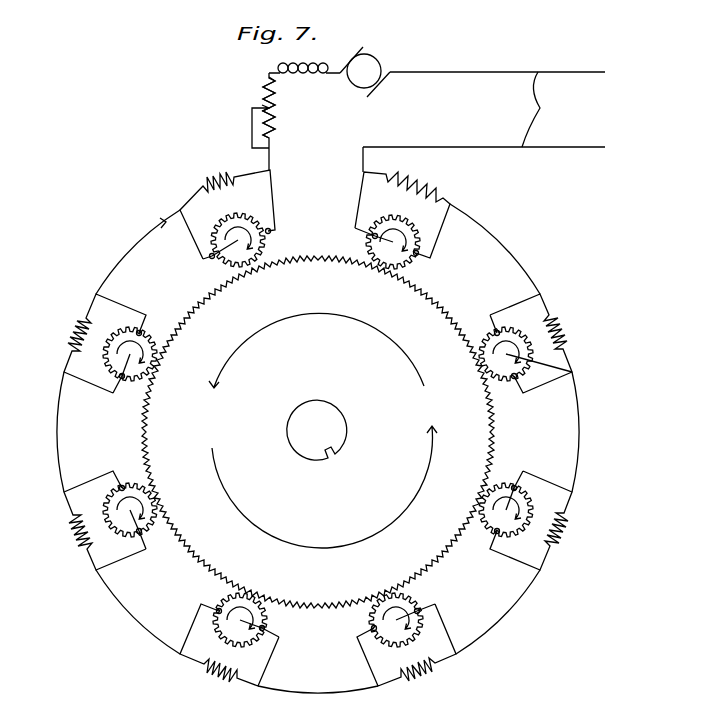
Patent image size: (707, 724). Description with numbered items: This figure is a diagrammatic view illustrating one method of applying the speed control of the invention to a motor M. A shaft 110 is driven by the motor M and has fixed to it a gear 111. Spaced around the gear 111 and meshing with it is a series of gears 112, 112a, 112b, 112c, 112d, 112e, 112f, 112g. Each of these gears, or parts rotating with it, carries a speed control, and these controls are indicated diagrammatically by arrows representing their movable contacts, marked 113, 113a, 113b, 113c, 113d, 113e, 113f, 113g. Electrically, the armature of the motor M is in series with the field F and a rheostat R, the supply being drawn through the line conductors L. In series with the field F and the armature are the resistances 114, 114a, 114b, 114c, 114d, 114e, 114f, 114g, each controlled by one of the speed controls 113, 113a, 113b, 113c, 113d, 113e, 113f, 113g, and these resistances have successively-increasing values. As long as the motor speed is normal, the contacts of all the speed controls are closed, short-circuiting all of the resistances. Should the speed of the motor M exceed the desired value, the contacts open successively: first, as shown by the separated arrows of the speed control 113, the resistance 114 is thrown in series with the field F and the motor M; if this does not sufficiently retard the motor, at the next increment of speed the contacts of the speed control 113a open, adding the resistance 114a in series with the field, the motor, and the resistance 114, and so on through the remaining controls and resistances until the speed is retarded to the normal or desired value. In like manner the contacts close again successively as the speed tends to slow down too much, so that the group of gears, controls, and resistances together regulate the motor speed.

The shaft 110 is at (336, 423).
The gear 111 is at (440, 304).
The gear 112 is at (271, 231).
The gear 112a is at (141, 366).
The gear 112b is at (156, 497).
The gear 112c is at (263, 630).
The gear 112d is at (420, 625).
The gear 112e is at (487, 523).
The gear 112f is at (514, 378).
The gear 112g is at (394, 268).
The speed control 113 is at (239, 239).
The speed control 113a is at (130, 355).
The speed control 113b is at (130, 512).
The speed control 113c is at (265, 607).
The speed control 113d is at (397, 617).
The speed control 113e is at (504, 506).
The speed control 113f is at (572, 372).
The speed control 113g is at (391, 244).
The resistance 114 is at (208, 181).
The resistance 114a is at (72, 328).
The resistance 114b is at (73, 536).
The resistance 114c is at (220, 675).
The resistance 114d is at (430, 682).
The resistance 114e is at (572, 532).
The resistance 114f is at (568, 313).
The resistance 114g is at (437, 181).
The field F is at (302, 67).
The motor M is at (380, 63).
The rheostat R is at (275, 108).
The line conductors L is at (538, 109).